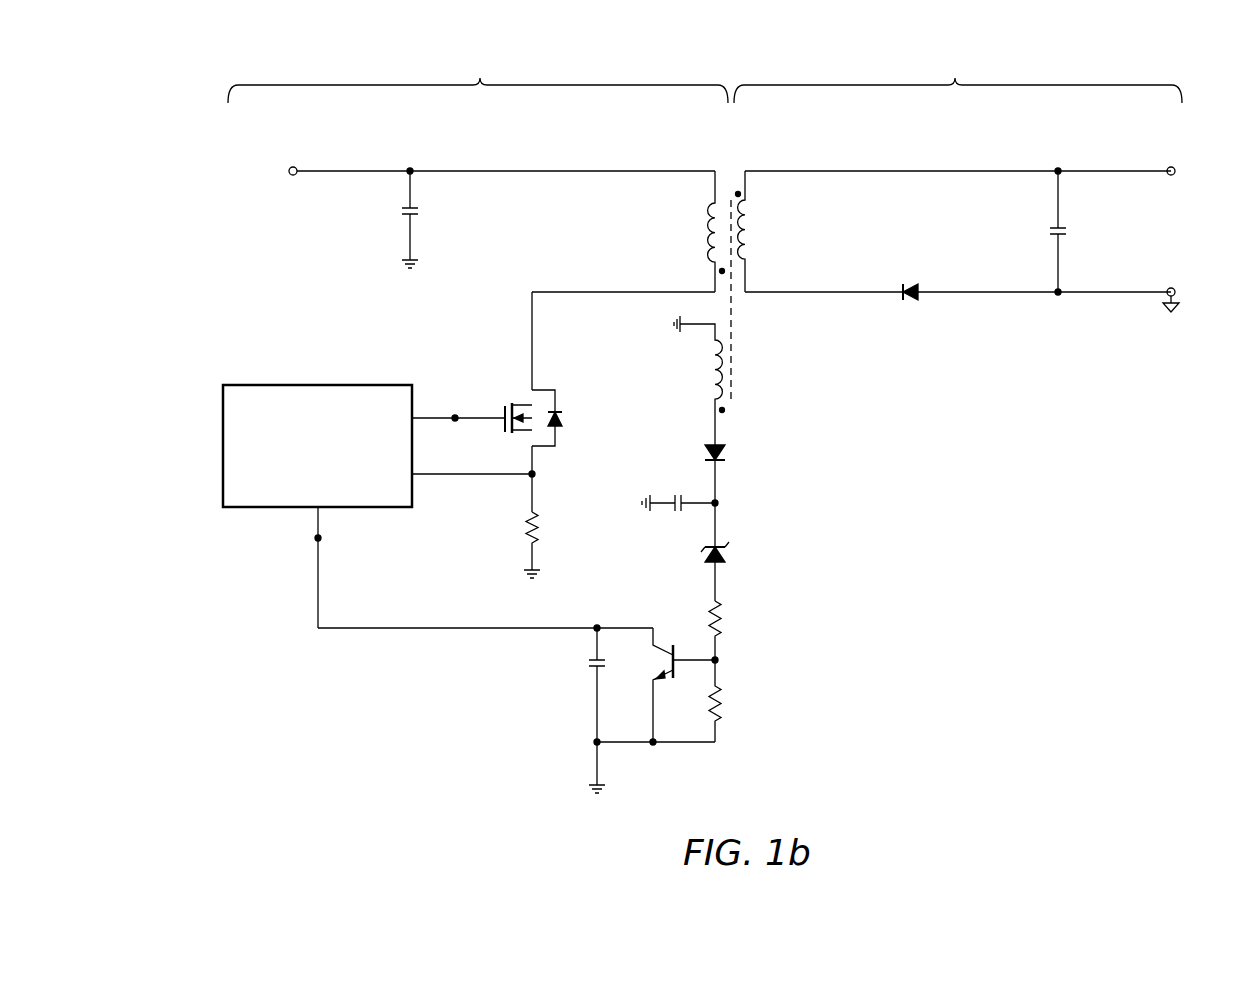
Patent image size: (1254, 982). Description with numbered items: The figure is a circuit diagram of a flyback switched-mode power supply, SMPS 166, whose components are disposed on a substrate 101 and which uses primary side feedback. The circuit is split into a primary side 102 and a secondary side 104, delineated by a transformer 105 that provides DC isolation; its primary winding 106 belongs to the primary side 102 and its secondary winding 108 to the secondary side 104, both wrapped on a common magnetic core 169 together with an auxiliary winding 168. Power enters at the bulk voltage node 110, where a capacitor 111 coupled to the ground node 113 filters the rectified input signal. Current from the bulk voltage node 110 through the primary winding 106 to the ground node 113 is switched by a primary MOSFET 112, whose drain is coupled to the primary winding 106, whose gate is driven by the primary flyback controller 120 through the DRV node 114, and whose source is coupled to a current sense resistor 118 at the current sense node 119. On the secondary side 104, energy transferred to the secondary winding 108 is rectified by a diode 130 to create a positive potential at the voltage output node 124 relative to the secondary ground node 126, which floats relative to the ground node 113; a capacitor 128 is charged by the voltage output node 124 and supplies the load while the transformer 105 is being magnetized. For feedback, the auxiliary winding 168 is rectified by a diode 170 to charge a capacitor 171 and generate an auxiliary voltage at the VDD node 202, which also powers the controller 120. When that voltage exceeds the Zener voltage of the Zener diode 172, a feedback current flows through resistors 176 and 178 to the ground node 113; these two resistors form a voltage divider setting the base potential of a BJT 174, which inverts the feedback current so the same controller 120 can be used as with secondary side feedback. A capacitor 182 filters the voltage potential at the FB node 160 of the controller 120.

The substrate 101 is at (221, 296).
The primary side 102 is at (478, 79).
The secondary side 104 is at (958, 79).
The transformer 105 is at (733, 168).
The primary winding 106 is at (706, 222).
The secondary winding 108 is at (752, 222).
The bulk voltage node 110 is at (291, 178).
The capacitor 111 is at (402, 211).
The primary MOSFET 112 is at (548, 392).
The ground node 113 is at (418, 264).
The DRV node 114 is at (456, 414).
The current sense resistor 118 is at (540, 530).
The current sense node 119 is at (537, 473).
The primary flyback controller 120 is at (318, 383).
The voltage output node 124 is at (1177, 176).
The ground node 126 is at (1173, 288).
The capacitor 128 is at (1066, 231).
The diode 130 is at (913, 302).
The FB node 160 is at (316, 539).
The SMPS 166 is at (205, 182).
The auxiliary winding 168 is at (708, 370).
The magnetic core 169 is at (738, 368).
The diode 170 is at (724, 452).
The capacitor 171 is at (677, 494).
The Zener diode 172 is at (726, 553).
The BJT 174 is at (665, 650).
The resistor 176 is at (722, 622).
The resistor 178 is at (722, 702).
The capacitor 182 is at (590, 664).
The VDD node 202 is at (722, 505).